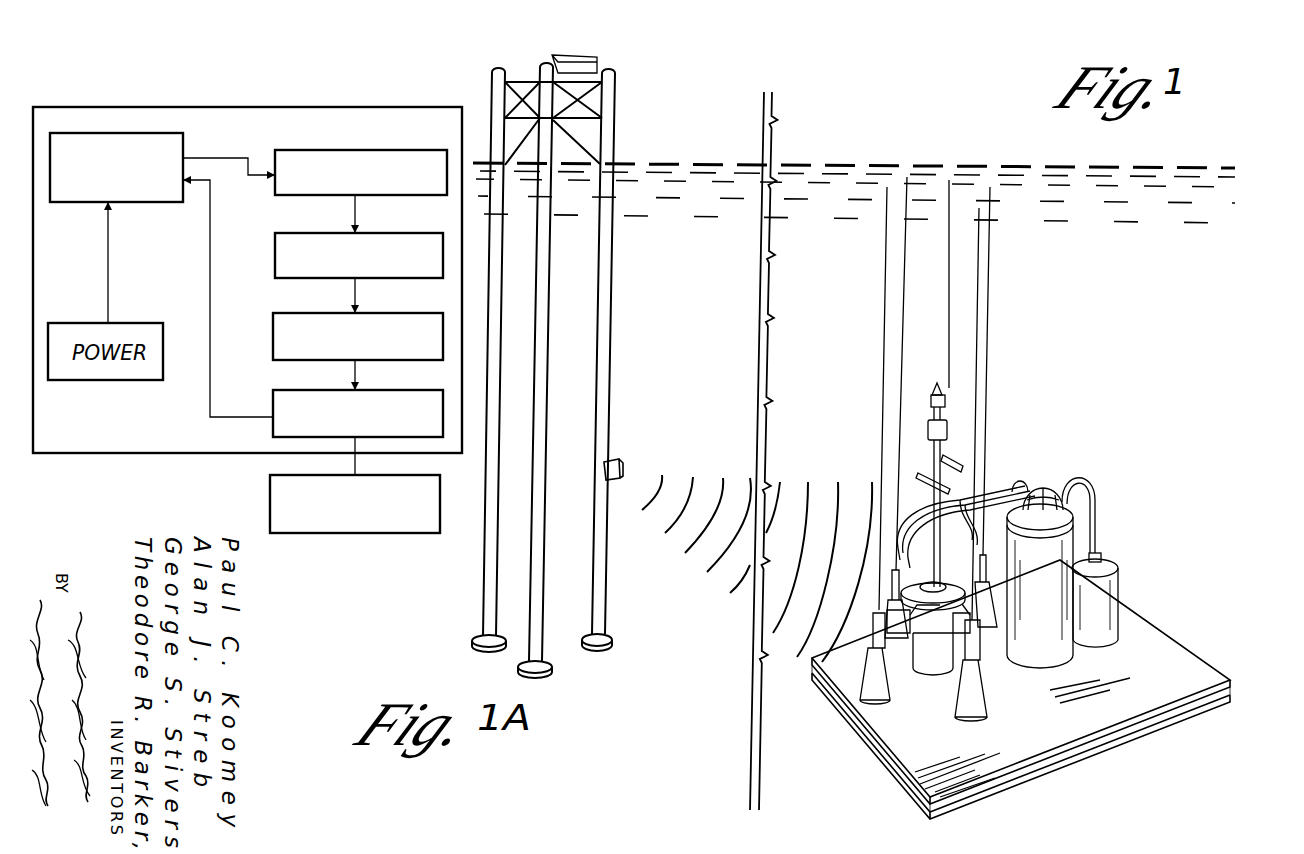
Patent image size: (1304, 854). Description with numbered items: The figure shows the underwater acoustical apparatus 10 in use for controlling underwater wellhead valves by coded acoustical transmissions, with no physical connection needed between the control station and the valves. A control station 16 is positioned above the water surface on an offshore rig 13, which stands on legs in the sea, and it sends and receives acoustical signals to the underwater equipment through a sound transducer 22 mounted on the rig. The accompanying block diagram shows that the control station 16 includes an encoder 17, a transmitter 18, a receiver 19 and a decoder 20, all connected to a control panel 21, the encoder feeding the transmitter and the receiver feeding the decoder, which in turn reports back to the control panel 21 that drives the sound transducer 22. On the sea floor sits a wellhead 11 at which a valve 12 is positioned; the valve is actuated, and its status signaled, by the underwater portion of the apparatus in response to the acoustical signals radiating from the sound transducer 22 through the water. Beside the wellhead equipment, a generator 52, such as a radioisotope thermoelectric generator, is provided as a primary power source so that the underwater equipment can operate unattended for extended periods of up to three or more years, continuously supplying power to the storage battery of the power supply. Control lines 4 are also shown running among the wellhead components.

In FIG. 1, the hydraulic control lines 4 is at (952, 552).
In FIG. 1, the accumulator tank 10 is at (1082, 539).
In FIG. 1, the guide post 11 is at (935, 665).
In FIG. 1, the wellhead 12 is at (928, 529).
In FIG. 1, the platform leg 13 is at (614, 268).
In FIG. 1A, the control unit 16 is at (305, 106).
In FIG. 1, the control unit 16 is at (602, 58).
In FIG. 1A, the encoder 17 is at (365, 150).
In FIG. 1A, the transmitter 18 is at (318, 233).
In FIG. 1A, the receiver 19 is at (320, 313).
In FIG. 1A, the decoder 20 is at (320, 390).
In FIG. 1A, the inputs and displays 21 is at (123, 133).
In FIG. 1A, the sound transducer 22 is at (270, 500).
In FIG. 1, the sound transducer 22 is at (618, 464).
In FIG. 1, the auxiliary tank 52 is at (1118, 597).